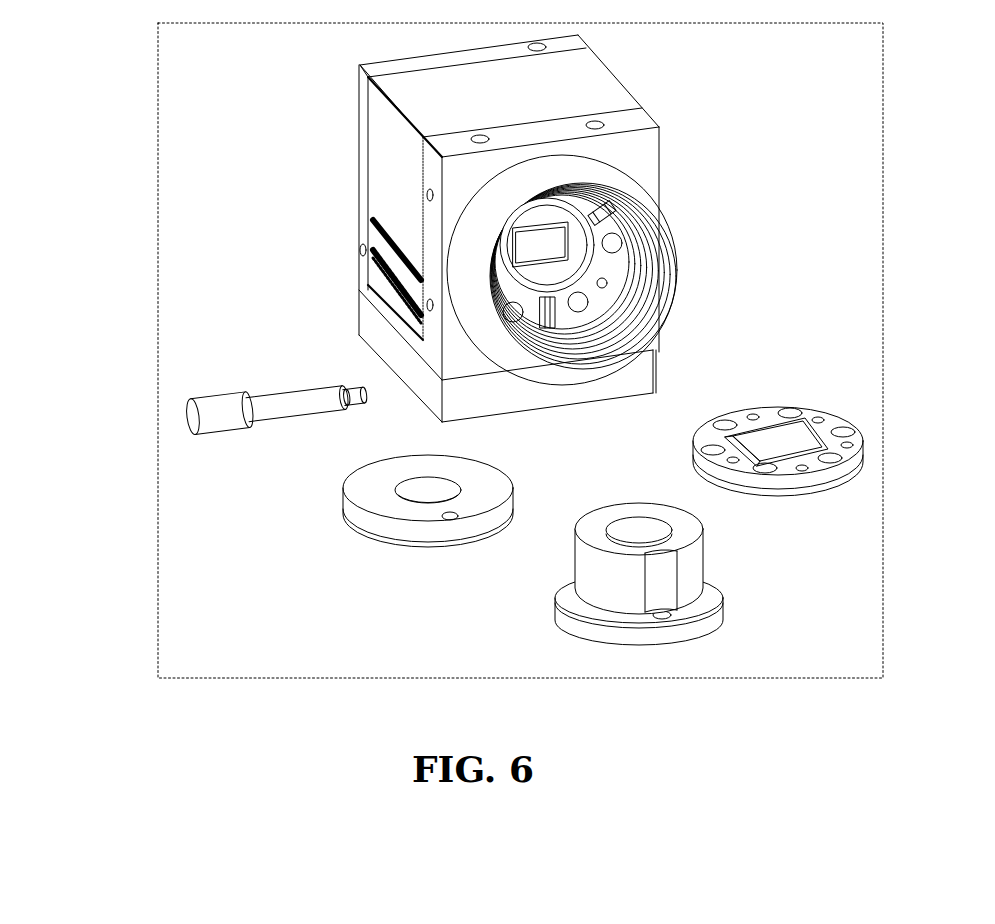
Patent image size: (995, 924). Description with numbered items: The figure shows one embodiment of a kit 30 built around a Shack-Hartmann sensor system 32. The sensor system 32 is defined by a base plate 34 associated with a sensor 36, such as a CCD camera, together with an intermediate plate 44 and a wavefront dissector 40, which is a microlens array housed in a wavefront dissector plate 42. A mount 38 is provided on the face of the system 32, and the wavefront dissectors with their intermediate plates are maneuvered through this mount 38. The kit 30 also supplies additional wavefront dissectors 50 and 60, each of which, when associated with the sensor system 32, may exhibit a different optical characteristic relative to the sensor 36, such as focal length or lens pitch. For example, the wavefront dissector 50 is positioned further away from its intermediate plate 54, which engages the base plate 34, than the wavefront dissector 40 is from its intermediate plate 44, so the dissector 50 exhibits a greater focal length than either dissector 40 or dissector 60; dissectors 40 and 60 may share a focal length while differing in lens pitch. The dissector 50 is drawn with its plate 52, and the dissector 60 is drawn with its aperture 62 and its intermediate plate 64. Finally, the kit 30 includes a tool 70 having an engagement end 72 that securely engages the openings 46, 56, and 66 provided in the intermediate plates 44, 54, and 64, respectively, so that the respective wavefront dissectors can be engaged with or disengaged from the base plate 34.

The kit 30 is at (158, 123).
The SH sensor system 32 is at (355, 173).
The base plate 34 is at (607, 268).
The sensor 36 is at (537, 245).
The mount 38 is at (660, 227).
The wavefront dissector 40 is at (782, 450).
The wavefront dissector plate 42 is at (805, 497).
The intermediate plate 44 is at (828, 425).
The openings 46 is at (798, 470).
The wavefront dissector 50 is at (592, 590).
The hub flange 52 is at (598, 618).
The intermediate plate 54 is at (677, 633).
The openings 56 is at (660, 617).
The wavefront dissector 60 is at (379, 523).
The central aperture 62 is at (370, 498).
The intermediate plate 64 is at (373, 528).
The openings 66 is at (447, 516).
The tool 70 is at (269, 359).
The engagement end 72 is at (350, 388).